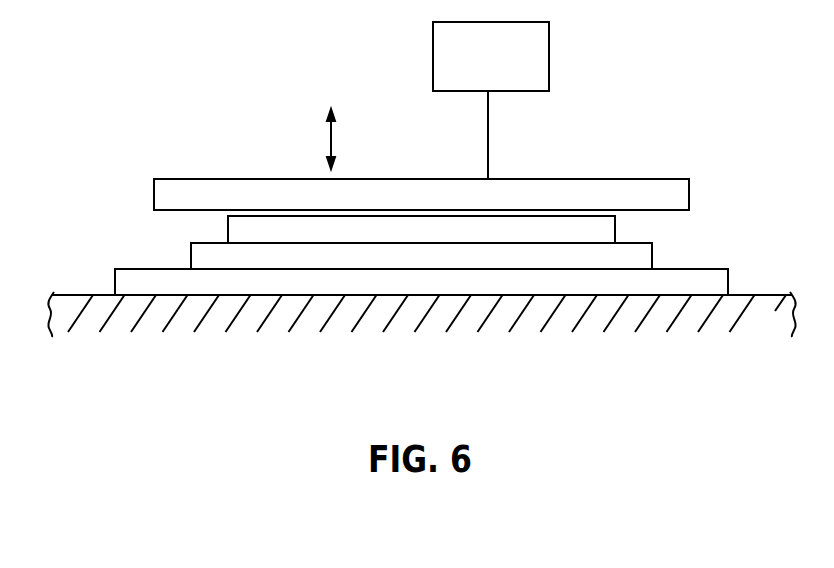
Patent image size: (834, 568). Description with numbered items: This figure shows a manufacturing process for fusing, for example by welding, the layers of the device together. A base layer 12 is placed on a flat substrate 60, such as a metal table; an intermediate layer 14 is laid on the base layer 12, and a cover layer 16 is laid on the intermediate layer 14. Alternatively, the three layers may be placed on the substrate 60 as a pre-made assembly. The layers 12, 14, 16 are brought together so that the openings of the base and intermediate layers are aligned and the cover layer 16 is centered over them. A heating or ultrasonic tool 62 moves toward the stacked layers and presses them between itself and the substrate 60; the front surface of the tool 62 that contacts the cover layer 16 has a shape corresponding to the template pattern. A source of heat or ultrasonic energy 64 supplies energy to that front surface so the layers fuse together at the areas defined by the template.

The base layer 12 is at (728, 282).
The intermediate layer 14 is at (652, 255).
The cover layer 16 is at (615, 228).
The substrate 60 is at (767, 297).
The heating or ultrasonic tool 62 is at (663, 188).
The source of heat or ultrasonic energy 64 is at (549, 39).